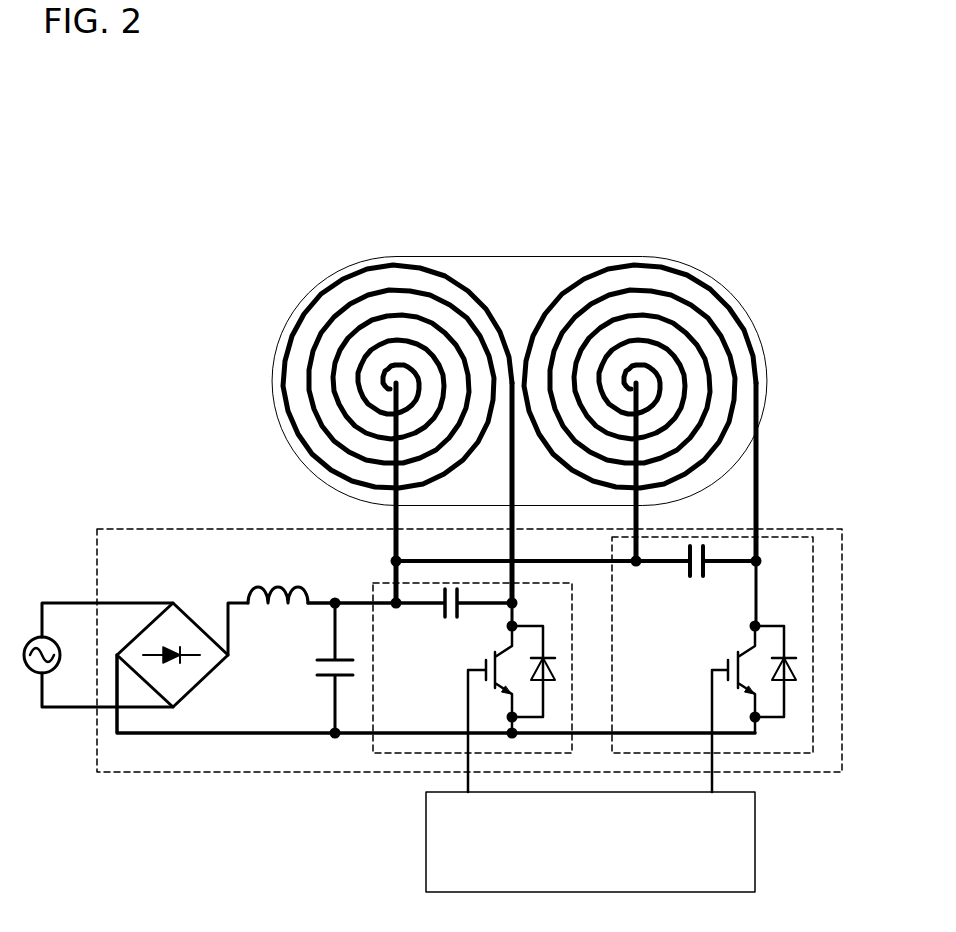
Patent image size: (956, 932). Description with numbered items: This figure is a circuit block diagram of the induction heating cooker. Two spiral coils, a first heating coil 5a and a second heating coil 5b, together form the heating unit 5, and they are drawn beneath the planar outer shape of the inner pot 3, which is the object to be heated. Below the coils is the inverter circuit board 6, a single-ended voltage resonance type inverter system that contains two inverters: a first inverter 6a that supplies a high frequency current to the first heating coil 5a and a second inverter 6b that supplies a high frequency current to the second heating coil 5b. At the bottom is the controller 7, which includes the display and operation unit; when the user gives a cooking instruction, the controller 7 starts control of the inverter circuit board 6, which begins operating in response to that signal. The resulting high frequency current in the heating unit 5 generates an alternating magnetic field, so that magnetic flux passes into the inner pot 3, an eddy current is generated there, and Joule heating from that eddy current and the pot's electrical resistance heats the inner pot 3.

The inner pot 3 is at (722, 282).
The heating unit 5 is at (617, 158).
The first heating coil 5a is at (438, 282).
The second heating coil 5b is at (573, 282).
The inverter circuit board 6 is at (223, 773).
The first inverter 6a is at (382, 773).
The second inverter 6b is at (805, 773).
The controller 7 is at (426, 858).